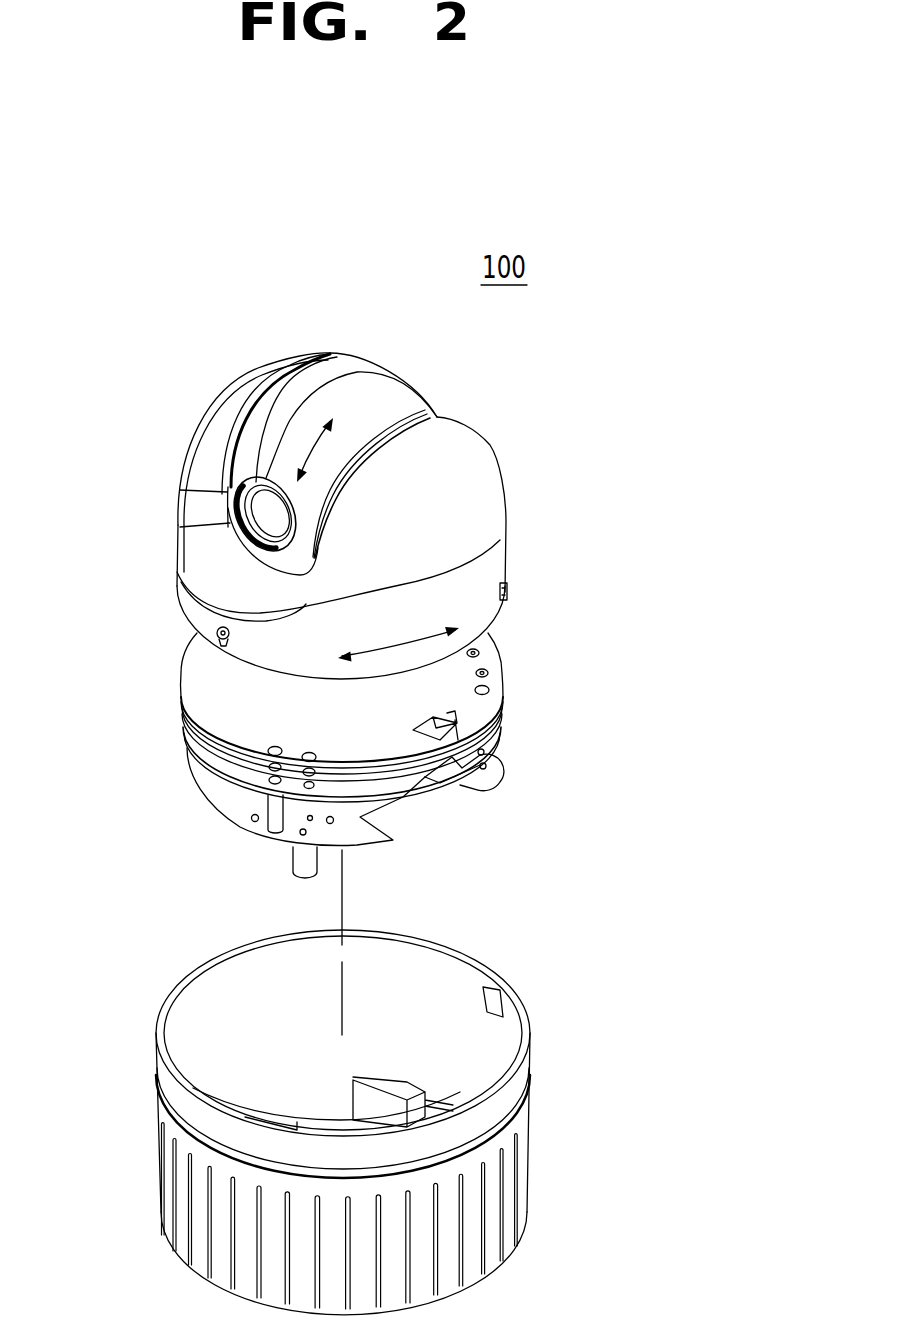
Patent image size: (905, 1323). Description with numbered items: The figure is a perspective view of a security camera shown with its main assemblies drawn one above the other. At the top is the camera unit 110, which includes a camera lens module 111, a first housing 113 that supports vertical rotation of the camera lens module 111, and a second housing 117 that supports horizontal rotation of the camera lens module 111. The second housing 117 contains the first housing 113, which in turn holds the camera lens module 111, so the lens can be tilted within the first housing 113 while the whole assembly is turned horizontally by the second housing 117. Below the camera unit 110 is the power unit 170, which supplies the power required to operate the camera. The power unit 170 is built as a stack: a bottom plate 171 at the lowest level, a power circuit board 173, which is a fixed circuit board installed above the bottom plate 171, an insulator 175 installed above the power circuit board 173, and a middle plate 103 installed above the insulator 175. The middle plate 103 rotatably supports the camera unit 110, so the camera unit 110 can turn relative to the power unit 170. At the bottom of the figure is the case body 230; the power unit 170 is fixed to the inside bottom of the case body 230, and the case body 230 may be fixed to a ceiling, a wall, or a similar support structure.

The camera unit 110 is at (226, 360).
The camera lens module 111 is at (262, 497).
The first housing 113 is at (380, 377).
The second housing 117 is at (483, 483).
The middle plate 103 is at (195, 673).
The power unit 170 is at (85, 733).
The insulator 175 is at (185, 722).
The power circuit board 173 is at (193, 743).
The bottom plate 171 is at (213, 793).
The case body 230 is at (175, 1168).